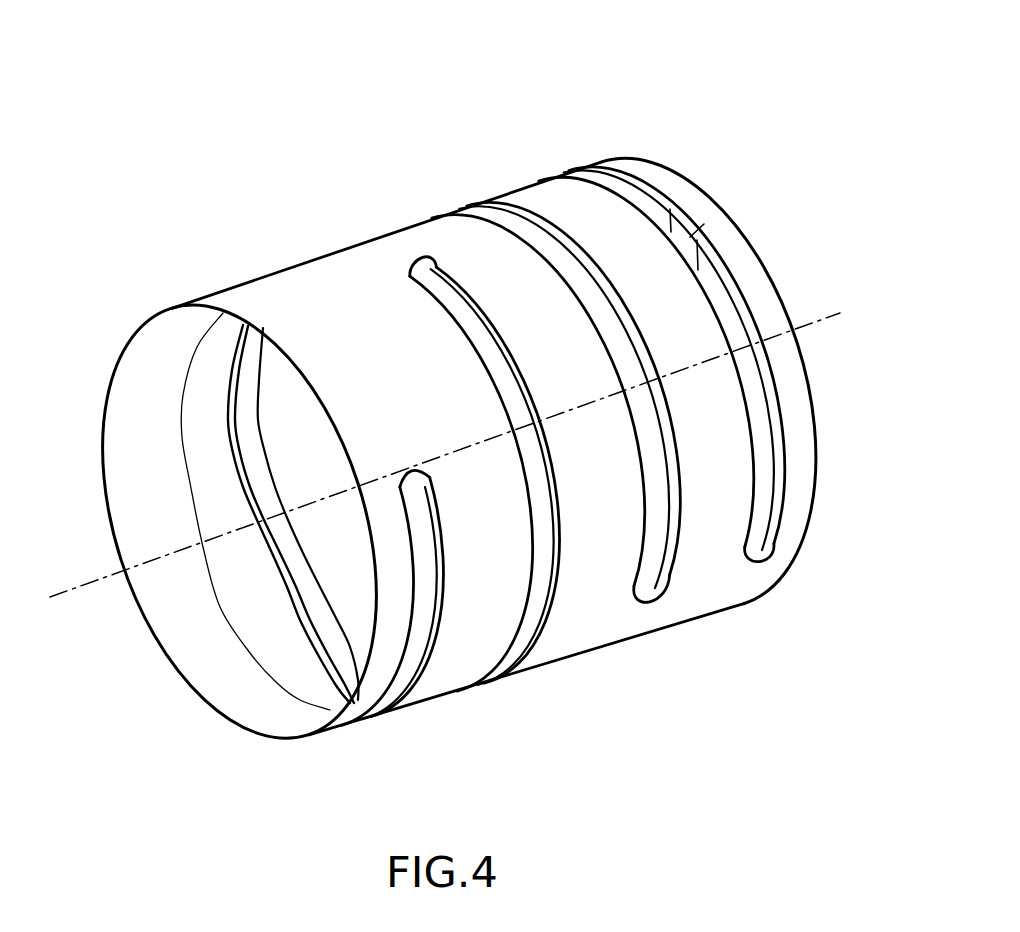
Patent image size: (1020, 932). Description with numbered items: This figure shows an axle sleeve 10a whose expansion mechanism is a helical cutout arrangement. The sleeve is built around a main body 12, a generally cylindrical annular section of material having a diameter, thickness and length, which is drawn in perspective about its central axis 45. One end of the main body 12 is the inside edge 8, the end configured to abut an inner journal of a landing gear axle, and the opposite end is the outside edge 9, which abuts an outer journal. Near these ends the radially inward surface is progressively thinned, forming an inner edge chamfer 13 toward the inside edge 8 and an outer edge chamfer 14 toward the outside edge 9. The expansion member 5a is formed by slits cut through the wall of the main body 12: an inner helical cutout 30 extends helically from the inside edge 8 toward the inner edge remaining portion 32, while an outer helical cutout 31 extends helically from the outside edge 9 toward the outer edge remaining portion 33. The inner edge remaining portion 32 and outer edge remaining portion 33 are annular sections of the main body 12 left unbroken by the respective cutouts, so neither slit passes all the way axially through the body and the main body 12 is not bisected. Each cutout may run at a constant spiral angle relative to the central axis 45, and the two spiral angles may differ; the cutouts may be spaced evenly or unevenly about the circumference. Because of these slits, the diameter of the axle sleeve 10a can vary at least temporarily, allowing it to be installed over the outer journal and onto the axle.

The axle sleeve 10a is at (532, 97).
The main body 12 is at (238, 289).
The inside edge 8 is at (136, 334).
The inner edge chamfer 13 is at (124, 517).
The expansion member 5a is at (467, 756).
The inner helical cutout 30 is at (400, 706).
The outer helical cutout 31 is at (470, 687).
The inner edge remaining portion 32 is at (390, 528).
The outer edge remaining portion 33 is at (803, 472).
The outside edge 9 is at (762, 256).
The outer edge chamfer 14 is at (689, 238).
The central axis 45 is at (820, 327).